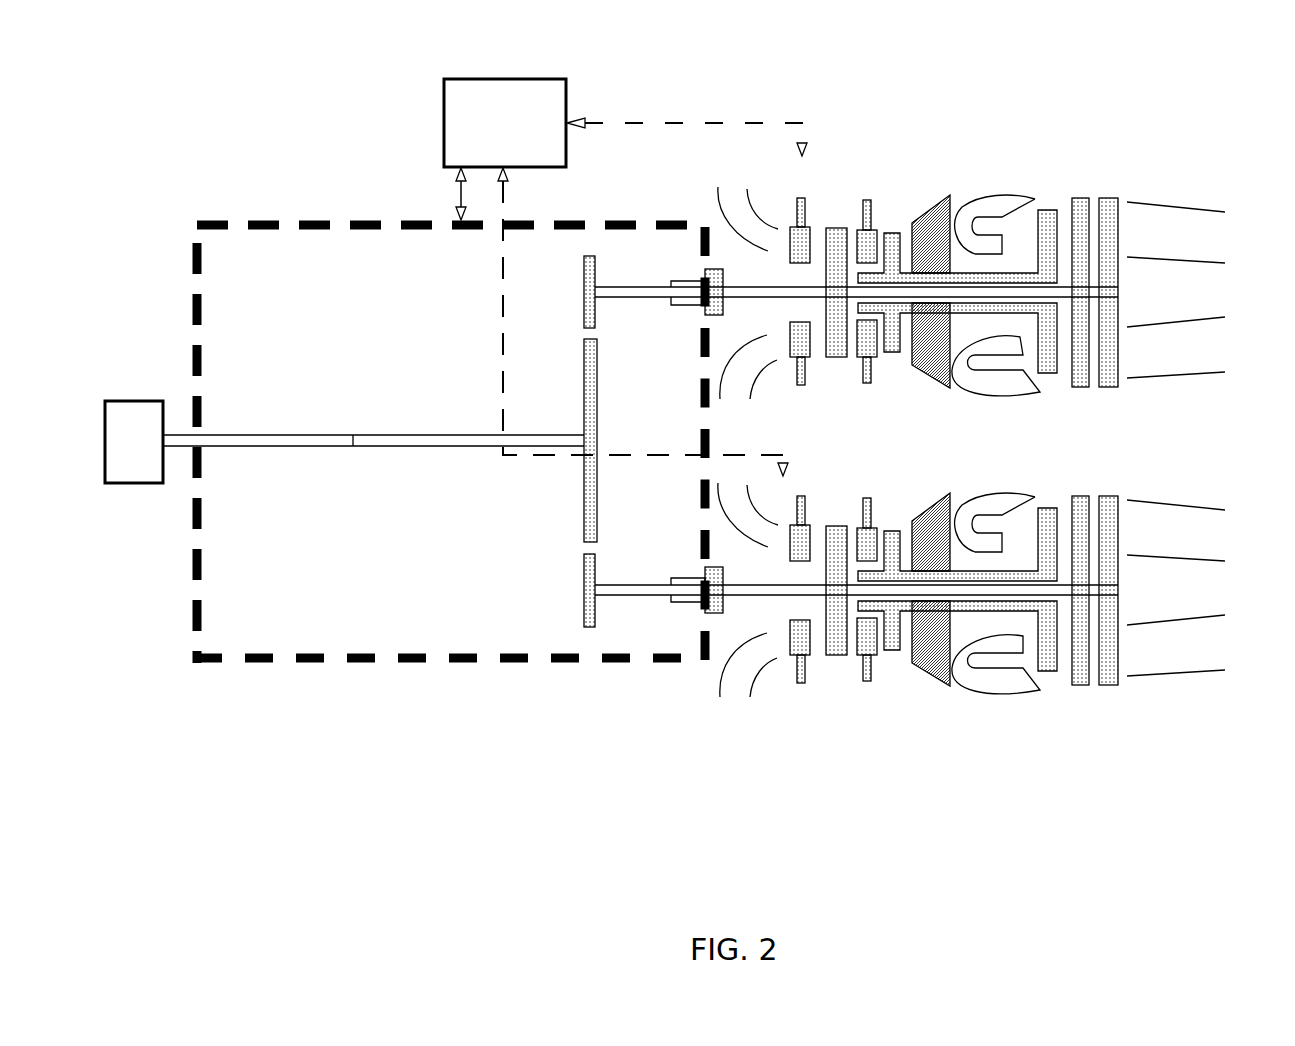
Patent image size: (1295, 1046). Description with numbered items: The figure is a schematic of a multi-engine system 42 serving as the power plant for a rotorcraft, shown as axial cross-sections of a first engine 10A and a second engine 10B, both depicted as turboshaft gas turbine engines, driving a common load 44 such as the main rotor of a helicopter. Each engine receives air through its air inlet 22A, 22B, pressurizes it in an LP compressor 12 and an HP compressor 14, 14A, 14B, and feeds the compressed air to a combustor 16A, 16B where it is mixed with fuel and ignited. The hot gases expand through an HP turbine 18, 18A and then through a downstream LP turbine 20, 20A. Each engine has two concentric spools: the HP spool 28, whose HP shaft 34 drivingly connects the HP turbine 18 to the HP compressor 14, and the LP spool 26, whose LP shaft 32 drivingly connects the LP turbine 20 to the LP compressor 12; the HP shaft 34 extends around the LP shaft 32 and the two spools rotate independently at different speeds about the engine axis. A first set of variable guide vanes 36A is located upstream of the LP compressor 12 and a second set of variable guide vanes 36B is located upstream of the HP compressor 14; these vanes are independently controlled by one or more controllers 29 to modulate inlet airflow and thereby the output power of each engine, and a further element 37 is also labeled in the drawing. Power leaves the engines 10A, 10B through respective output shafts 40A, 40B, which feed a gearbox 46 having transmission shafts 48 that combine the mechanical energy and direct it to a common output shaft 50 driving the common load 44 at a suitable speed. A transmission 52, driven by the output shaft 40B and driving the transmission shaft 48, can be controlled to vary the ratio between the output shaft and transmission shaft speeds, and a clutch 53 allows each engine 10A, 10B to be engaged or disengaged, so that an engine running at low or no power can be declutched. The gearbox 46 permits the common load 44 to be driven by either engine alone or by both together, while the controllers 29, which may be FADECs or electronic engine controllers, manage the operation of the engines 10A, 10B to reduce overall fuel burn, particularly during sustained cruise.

The first engine 10A is at (1040, 148).
The second engine 10B is at (1040, 738).
The LP compressor 12 is at (835, 228).
The HP compressor 14 is at (895, 182).
The HP compressor 14A is at (890, 232).
The HP compressor 14B is at (890, 530).
The combustor 16A is at (991, 397).
The combustor 16B is at (990, 692).
The HP turbine 18 is at (1028, 182).
The high pressure turbine 18A is at (1050, 222).
The LP turbine 20 is at (1080, 388).
The power turbine rotors 20A is at (1110, 198).
The inlet 22A is at (727, 187).
The inlet 22B is at (740, 695).
The LP spool 26 is at (1132, 292).
The HP spool 28 is at (963, 263).
The controller 29 is at (566, 107).
The LP shaft 32 is at (914, 290).
The HP shaft 34 is at (1022, 313).
The first set of variable guide vanes 36A is at (794, 388).
The second set of variable guide vanes 36B is at (859, 385).
The compressor rotors 37 is at (795, 695).
The output shaft 40A is at (748, 277).
The output shaft 40B is at (748, 590).
The multi-engine system 42 is at (262, 150).
The common load 44 is at (136, 399).
The gearbox 46 is at (415, 663).
The transmission shaft 48 is at (634, 287).
The common output shaft 50 is at (182, 448).
The transmission 52 is at (688, 568).
The clutch 53 is at (718, 262).